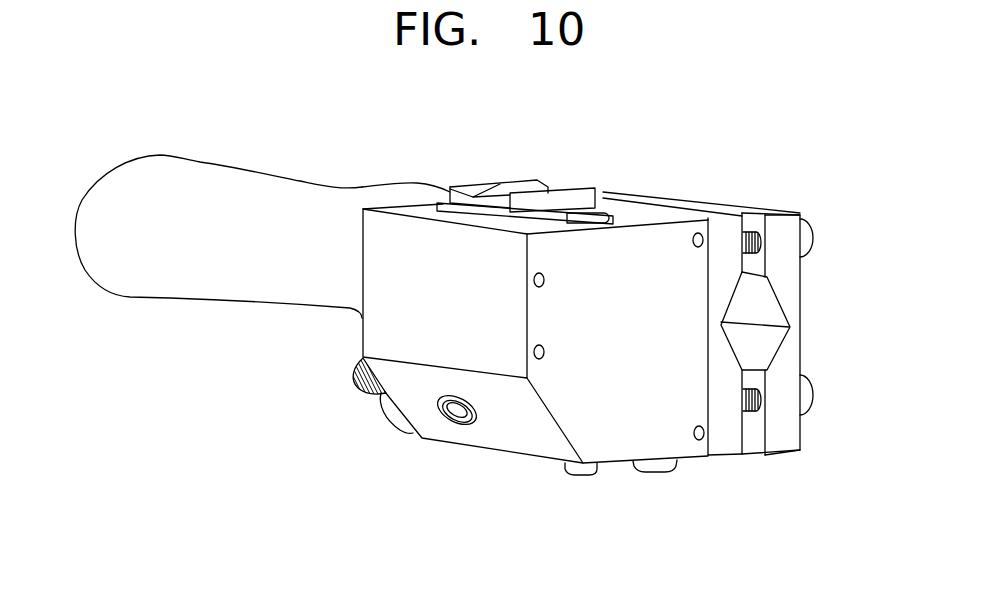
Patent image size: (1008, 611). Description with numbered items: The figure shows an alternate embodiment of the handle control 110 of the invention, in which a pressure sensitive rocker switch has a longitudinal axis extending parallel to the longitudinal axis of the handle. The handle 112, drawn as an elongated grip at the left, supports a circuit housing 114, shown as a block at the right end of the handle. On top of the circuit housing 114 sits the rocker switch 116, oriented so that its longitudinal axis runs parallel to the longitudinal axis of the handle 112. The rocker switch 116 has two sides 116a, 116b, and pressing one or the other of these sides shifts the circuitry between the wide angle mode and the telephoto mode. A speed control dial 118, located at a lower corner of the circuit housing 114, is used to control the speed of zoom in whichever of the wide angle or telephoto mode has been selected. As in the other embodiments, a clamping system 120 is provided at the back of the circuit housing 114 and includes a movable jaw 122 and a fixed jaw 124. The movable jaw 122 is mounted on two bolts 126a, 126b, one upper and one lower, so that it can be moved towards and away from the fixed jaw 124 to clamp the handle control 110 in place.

The handle control 110 is at (690, 158).
The handle 112 is at (195, 286).
The circuit housing 114 is at (575, 410).
The rocker switch 116 is at (548, 155).
The side of the rocker switch 116a is at (475, 193).
The side of the rocker switch 116b is at (573, 190).
The speed control dial 118 is at (364, 392).
The clamping system 120 is at (840, 254).
The movable jaw 122 is at (785, 442).
The fixed jaw 124 is at (727, 448).
The bolt 126a is at (755, 413).
The bolt 126b is at (749, 230).